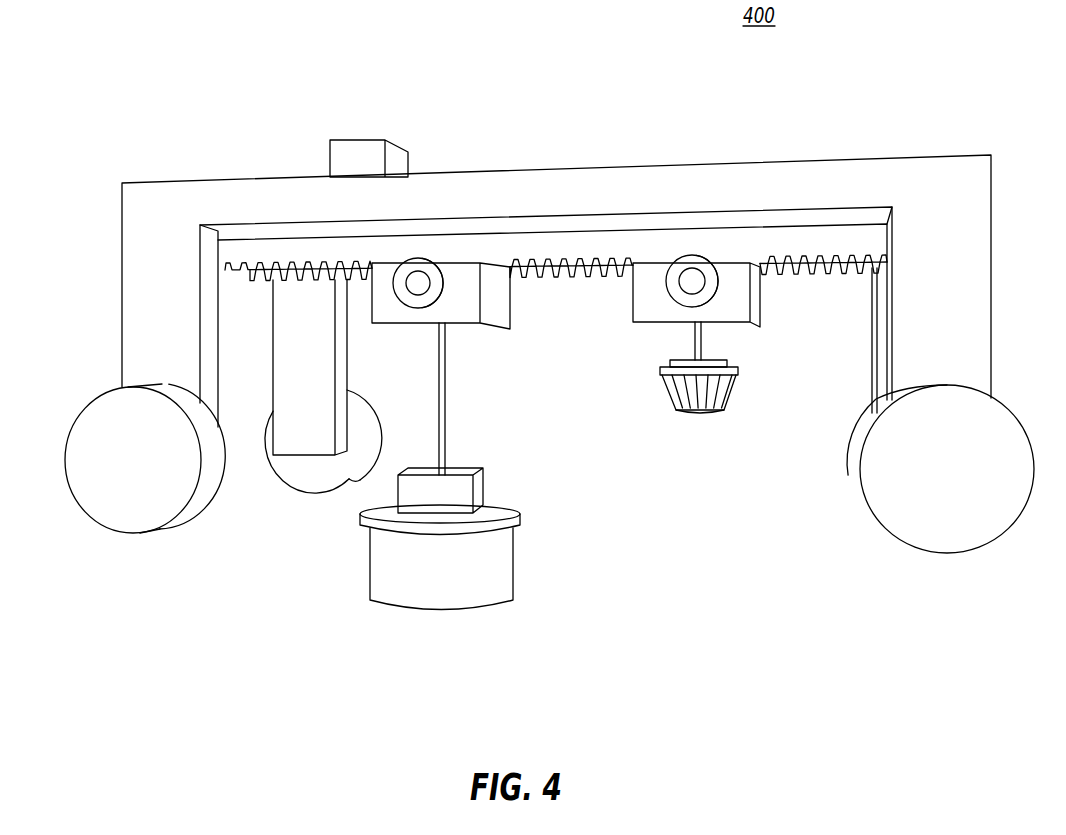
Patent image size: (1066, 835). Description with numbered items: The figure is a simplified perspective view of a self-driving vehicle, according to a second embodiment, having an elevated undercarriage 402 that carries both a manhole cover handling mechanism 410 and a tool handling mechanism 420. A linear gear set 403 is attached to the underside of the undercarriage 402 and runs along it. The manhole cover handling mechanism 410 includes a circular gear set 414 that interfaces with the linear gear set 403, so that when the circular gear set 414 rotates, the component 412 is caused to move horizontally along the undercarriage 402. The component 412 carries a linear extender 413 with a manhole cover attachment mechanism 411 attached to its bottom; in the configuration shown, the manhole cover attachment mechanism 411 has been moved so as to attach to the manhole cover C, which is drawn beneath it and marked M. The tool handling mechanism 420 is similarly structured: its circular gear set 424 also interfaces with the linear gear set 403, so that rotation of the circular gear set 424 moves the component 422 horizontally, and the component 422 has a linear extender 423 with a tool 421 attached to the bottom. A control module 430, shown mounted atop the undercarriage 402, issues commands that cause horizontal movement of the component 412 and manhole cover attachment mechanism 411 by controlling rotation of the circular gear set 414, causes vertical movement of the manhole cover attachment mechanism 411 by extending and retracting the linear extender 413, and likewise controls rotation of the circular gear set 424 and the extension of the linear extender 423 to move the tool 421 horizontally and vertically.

The elevated undercarriage 402 is at (633, 187).
The linear gear set 403 is at (562, 280).
The manhole cover handling mechanism 410 is at (486, 321).
The manhole cover attachment mechanism 411 is at (451, 510).
The component 412 is at (441, 229).
The linear extender 413 is at (442, 377).
The circular gear set 414 is at (423, 267).
The tool handling mechanism 420 is at (739, 298).
The tool 421 is at (738, 385).
The component 422 is at (697, 255).
The linear extender 423 is at (703, 347).
The circular gear set 424 is at (697, 258).
The control module 430 is at (375, 168).
The manhole cover C is at (520, 522).
The material M is at (461, 583).